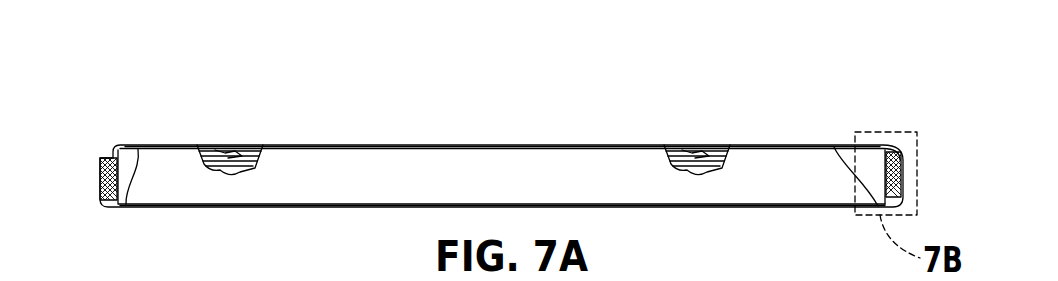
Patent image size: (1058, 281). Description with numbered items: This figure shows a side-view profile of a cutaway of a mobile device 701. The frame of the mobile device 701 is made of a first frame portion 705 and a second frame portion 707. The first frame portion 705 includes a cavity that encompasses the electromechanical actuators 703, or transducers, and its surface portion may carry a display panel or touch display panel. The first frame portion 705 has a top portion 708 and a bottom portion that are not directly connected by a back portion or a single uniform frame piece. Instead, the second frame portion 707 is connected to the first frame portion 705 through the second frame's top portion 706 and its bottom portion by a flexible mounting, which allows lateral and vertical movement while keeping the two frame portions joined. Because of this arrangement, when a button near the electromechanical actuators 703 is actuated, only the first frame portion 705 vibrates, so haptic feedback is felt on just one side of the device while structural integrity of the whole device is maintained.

The mobile device 701 is at (238, 56).
The electromechanical actuators 703 is at (222, 157).
The first frame portion 705 is at (499, 142).
The top portion of second frame portion 706 is at (100, 182).
The second frame portion 707 is at (315, 211).
The top portion of first frame portion 708 is at (115, 180).